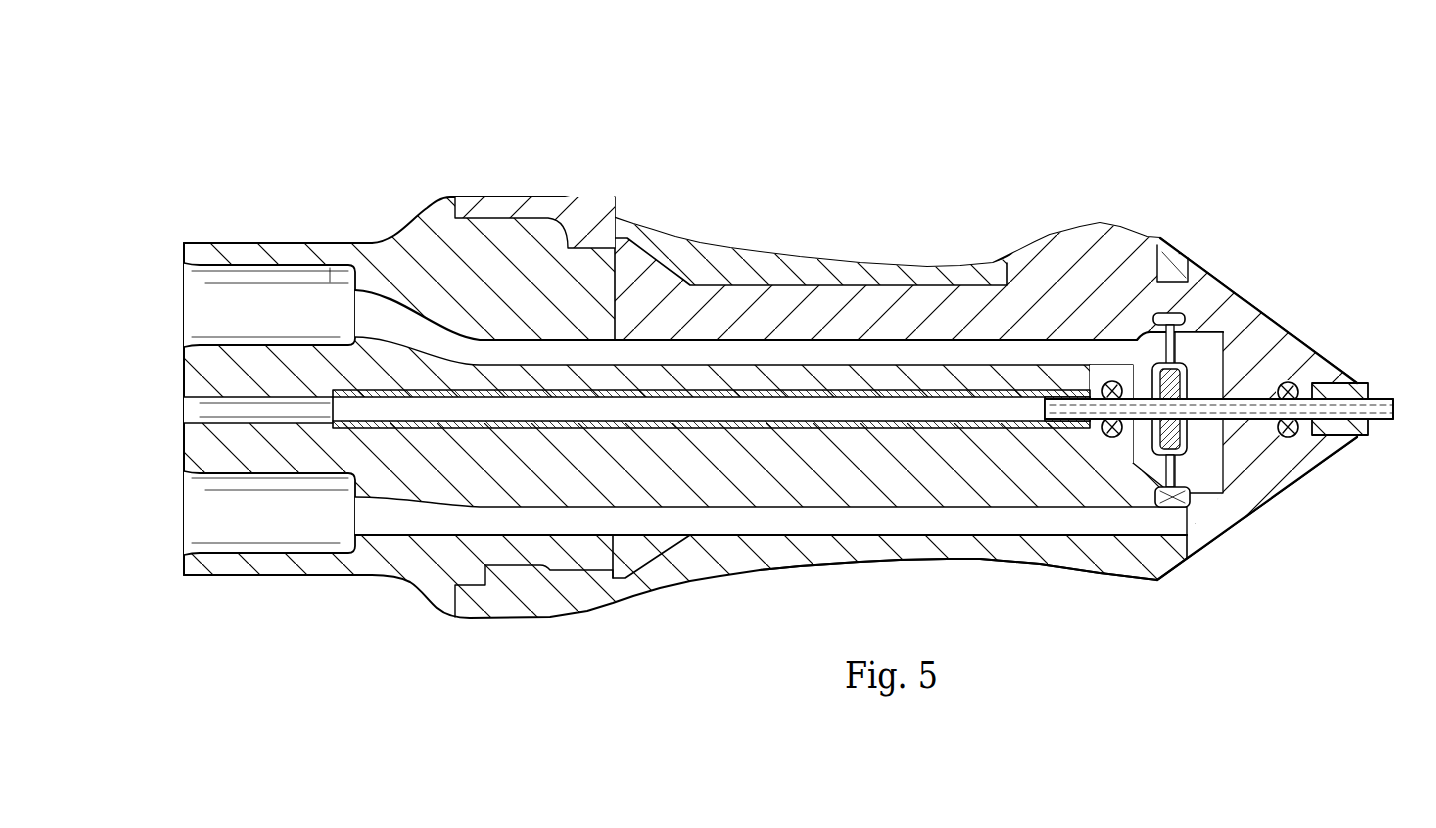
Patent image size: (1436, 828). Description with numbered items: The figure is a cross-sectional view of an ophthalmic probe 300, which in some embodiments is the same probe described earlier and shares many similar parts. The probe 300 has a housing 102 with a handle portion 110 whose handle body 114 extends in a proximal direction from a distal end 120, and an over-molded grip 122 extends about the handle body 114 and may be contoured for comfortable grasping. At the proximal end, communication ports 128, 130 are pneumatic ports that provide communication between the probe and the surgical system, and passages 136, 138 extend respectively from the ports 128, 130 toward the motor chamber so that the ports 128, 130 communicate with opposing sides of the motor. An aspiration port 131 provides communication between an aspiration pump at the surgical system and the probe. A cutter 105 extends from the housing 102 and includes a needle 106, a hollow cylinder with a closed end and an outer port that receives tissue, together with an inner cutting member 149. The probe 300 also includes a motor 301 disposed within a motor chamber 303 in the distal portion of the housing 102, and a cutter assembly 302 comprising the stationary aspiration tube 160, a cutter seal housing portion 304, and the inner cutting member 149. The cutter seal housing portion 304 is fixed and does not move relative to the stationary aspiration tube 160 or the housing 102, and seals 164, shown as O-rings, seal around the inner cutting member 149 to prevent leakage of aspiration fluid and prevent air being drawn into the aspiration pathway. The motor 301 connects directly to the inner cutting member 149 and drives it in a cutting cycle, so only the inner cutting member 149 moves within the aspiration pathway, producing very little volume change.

The ophthalmic probe 300 is at (1088, 93).
The housing 102 is at (519, 633).
The handle portion 110 is at (736, 578).
The handle body 114 is at (1214, 528).
The distal end 120 is at (1362, 382).
The over-molded grip 122 is at (943, 555).
The communication port 128 is at (190, 300).
The communication port 130 is at (190, 518).
The aspiration port 131 is at (190, 405).
The passage 136 is at (360, 316).
The passage 138 is at (358, 520).
The inner cutting member 149 is at (1262, 422).
The stationary aspiration tube 160 is at (890, 388).
The seal 164 is at (1115, 380).
The motor 301 is at (1178, 320).
The cutter assembly 302 is at (1076, 442).
The motor chamber 303 is at (1208, 338).
The cutter seal housing portion 304 is at (807, 480).
The cutter 105 is at (1378, 431).
The needle 106 is at (1374, 392).